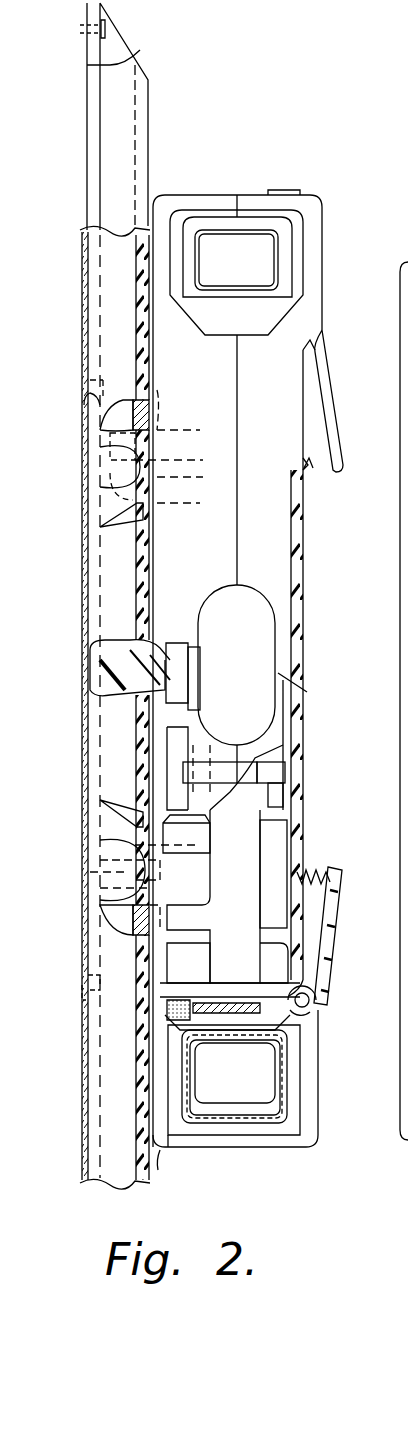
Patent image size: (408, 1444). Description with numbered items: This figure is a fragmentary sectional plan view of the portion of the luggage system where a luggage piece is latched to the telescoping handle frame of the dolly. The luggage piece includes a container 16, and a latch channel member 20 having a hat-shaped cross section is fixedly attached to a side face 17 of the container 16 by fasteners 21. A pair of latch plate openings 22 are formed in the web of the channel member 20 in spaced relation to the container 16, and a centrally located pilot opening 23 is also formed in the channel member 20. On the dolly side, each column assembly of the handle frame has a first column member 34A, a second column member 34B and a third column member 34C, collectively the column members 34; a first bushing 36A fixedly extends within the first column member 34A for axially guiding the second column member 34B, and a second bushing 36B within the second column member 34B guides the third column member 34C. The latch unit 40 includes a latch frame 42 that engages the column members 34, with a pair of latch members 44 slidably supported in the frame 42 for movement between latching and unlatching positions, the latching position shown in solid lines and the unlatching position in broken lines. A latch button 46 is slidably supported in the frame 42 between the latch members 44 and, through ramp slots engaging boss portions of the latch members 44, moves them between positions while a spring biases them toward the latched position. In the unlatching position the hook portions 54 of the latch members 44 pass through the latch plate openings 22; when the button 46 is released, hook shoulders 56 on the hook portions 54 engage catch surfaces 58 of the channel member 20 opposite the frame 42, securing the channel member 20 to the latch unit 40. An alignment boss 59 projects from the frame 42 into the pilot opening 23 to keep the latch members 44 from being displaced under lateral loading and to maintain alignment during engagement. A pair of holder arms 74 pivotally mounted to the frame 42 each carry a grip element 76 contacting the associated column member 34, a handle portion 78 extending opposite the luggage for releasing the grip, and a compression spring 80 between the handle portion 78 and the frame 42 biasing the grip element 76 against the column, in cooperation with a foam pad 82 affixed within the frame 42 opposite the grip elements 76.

The container 16 is at (82, 1172).
The side face 17 is at (108, 60).
The latch channel member 20 is at (160, 1202).
The fasteners 21 is at (110, 30).
The latch plate openings 22 is at (100, 527).
The pilot opening 23 is at (120, 650).
The column members 34 is at (305, 206).
The first column member 34A is at (240, 1147).
The second column member 34B is at (278, 1066).
The third column member 34C is at (246, 1106).
The first bushing 36A is at (275, 338).
The second bushing 36B is at (262, 312).
The latch unit 40 is at (180, 1148).
The latch frame 42 is at (235, 1147).
The latch members 44 is at (100, 375).
The latch button 46 is at (237, 585).
The hook portions 54 is at (100, 465).
The hook shoulders 56 is at (150, 410).
The catch surfaces 58 is at (100, 440).
The alignment boss 59 is at (92, 637).
The holder arms 74 is at (323, 375).
The grip element 76 is at (318, 1108).
The handle portion 78 is at (356, 868).
The compression spring 80 is at (308, 470).
The foam pad 82 is at (200, 995).